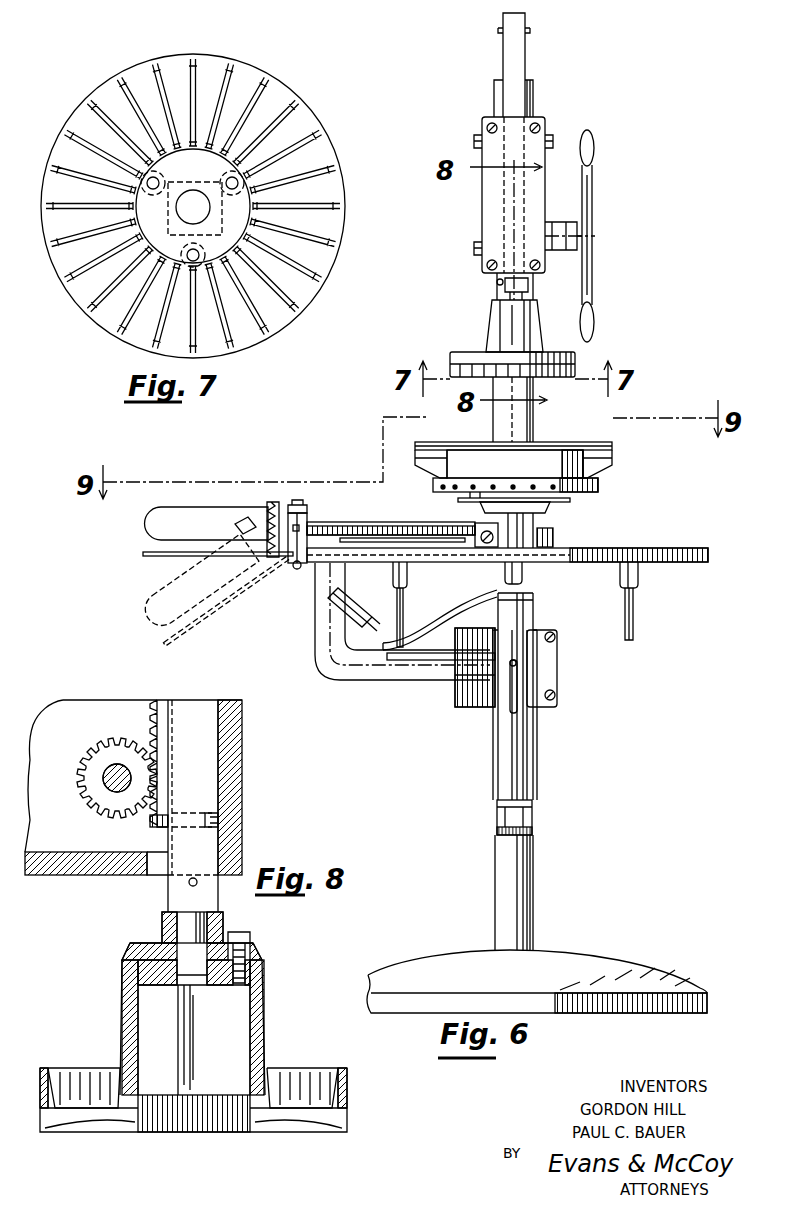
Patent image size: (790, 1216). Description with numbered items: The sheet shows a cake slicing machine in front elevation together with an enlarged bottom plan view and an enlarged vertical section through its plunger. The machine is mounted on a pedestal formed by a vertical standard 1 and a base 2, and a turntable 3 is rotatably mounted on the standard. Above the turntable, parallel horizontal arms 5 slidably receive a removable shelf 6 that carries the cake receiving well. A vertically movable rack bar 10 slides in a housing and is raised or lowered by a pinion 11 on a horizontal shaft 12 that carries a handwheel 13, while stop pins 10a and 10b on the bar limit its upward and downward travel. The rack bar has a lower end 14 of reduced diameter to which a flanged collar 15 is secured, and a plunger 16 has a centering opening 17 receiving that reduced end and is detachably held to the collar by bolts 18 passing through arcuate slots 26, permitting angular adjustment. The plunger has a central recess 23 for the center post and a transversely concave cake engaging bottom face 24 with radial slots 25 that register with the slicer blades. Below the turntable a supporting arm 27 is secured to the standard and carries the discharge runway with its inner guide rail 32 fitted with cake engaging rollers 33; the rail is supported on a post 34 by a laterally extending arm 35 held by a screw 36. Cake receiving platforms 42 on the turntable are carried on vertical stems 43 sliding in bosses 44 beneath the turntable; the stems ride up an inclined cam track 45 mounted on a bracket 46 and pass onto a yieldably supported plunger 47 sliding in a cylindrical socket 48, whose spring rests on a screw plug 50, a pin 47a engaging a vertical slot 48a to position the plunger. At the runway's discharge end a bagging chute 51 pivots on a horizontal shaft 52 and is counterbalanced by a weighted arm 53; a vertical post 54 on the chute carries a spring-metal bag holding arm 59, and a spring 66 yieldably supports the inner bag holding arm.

In FIG. 6, the vertical standard 1 is at (531, 96).
In FIG. 6, the base 2 is at (590, 963).
In FIG. 6, the turntable 3 is at (707, 556).
In FIG. 6, the horizontal arms 5 is at (416, 458).
In FIG. 6, the shelf 6 is at (574, 443).
In FIG. 7, the rack bar 10 is at (176, 210).
In FIG. 6, the rack bar 10 is at (514, 156).
In FIG. 8, the rack bar 10 is at (190, 705).
In FIG. 6, the stop pin 10a is at (497, 31).
In FIG. 6, the stop pin 10b is at (496, 282).
In FIG. 8, the stop pin 10b is at (198, 885).
In FIG. 8, the pinion 11 is at (93, 798).
In FIG. 8, the horizontal shaft 12 is at (103, 746).
In FIG. 6, the handwheel 13 is at (591, 177).
In FIG. 8, the lower end of reduced diameter 14 is at (182, 922).
In FIG. 8, the flanged collar 15 is at (131, 944).
In FIG. 6, the plunger 16 is at (490, 320).
In FIG. 8, the plunger 16 is at (232, 1037).
In FIG. 8, the centering opening 17 is at (195, 988).
In FIG. 7, the bolts 18 is at (200, 252).
In FIG. 8, the bolts 18 is at (251, 934).
In FIG. 7, the central recess 23 is at (246, 205).
In FIG. 8, the central recess 23 is at (193, 1088).
In FIG. 7, the cake engaging bottom face 24 is at (302, 125).
In FIG. 7, the radial slots 25 is at (99, 98).
In FIG. 8, the radial slots 25 is at (298, 1098).
In FIG. 7, the arcuate slots 26 is at (168, 178).
In FIG. 6, the supporting arm 27 is at (328, 672).
In FIG. 6, the inner guide rail 32 is at (352, 522).
In FIG. 6, the cake engaging rollers 33 is at (402, 530).
In FIG. 6, the post 34 is at (305, 526).
In FIG. 6, the laterally extending arm 35 is at (300, 536).
In FIG. 6, the screw 36 is at (292, 506).
In FIG. 6, the platforms 42 is at (571, 500).
In FIG. 6, the vertical stems 43 is at (555, 536).
In FIG. 6, the bosses 44 is at (393, 574).
In FIG. 6, the inclined cam track 45 is at (446, 618).
In FIG. 6, the bracket 46 is at (452, 660).
In FIG. 6, the plunger 47 is at (523, 620).
In FIG. 6, the pin 47a is at (516, 664).
In FIG. 6, the cylindrical socket 48 is at (495, 766).
In FIG. 6, the vertical slot 48a is at (517, 704).
In FIG. 6, the screw plug 50 is at (532, 810).
In FIG. 6, the bagging chute 51 is at (147, 557).
In FIG. 6, the horizontal shaft 52 is at (296, 570).
In FIG. 6, the weighted arm 53 is at (333, 601).
In FIG. 6, the vertical post 54 is at (270, 503).
In FIG. 6, the bag holding arm 59 is at (146, 524).
In FIG. 6, the spring 66 is at (250, 518).